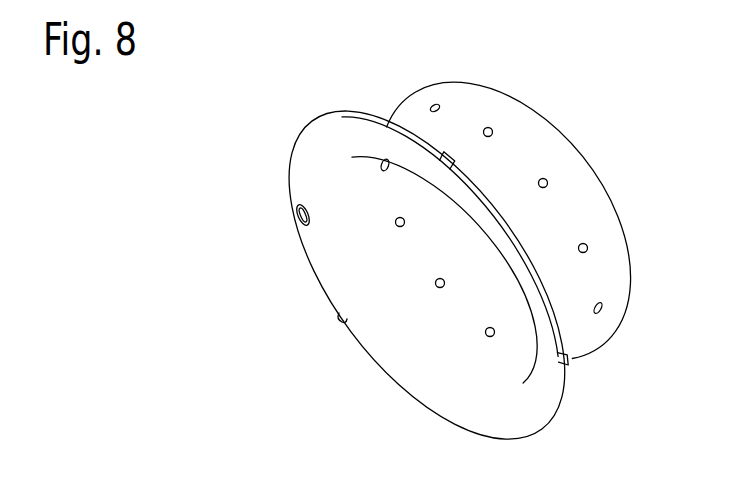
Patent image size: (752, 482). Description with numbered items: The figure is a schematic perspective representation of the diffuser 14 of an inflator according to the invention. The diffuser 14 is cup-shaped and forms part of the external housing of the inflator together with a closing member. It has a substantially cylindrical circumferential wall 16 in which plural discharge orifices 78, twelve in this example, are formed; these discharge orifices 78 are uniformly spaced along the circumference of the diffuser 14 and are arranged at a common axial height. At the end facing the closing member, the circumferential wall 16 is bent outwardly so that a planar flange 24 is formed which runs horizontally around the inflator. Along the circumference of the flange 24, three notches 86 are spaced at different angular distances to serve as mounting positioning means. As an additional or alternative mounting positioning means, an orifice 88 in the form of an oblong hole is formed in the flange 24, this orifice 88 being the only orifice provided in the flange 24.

The diffuser 14 is at (589, 114).
The circumferential wall 16 is at (455, 136).
The flange 24 is at (333, 137).
The discharge orifices 78 is at (586, 245).
The notches 86 is at (339, 313).
The orifice 88 is at (297, 212).